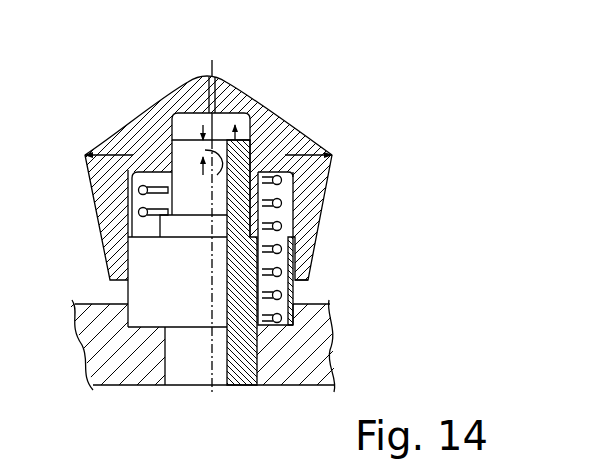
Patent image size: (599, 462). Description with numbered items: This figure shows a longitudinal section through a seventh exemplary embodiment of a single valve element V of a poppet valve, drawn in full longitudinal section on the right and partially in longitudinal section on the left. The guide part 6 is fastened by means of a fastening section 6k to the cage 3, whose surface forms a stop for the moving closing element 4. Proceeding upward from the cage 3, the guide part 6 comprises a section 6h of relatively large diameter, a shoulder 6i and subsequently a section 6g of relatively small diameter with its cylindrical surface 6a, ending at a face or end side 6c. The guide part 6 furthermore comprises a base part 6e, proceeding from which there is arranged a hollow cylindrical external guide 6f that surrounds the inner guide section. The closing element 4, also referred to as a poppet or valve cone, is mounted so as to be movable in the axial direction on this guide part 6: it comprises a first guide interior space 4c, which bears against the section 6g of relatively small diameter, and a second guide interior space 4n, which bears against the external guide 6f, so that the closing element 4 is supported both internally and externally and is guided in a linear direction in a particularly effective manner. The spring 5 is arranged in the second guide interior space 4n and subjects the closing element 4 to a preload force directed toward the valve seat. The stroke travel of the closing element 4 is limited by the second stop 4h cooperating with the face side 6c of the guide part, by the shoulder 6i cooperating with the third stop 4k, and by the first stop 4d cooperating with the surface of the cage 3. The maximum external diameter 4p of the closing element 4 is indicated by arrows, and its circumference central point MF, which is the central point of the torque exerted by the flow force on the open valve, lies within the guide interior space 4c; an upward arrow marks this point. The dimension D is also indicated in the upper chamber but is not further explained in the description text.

The cage 3 is at (298, 368).
The closing element 4 is at (200, 92).
The first guide interior space 4c is at (170, 113).
The first stop 4d is at (304, 284).
The second stop 4h is at (212, 62).
The third stop 4k is at (133, 155).
The second guide interior space 4n is at (288, 228).
The maximum external diameter 4p is at (88, 160).
The spring 5 is at (128, 213).
The guide part 6 is at (258, 152).
The cylindrical surface 6a is at (272, 145).
The face side 6c is at (222, 123).
The base part 6e is at (282, 305).
The external guide 6f is at (138, 286).
The section of relatively small diameter 6g is at (295, 150).
The section of relatively large diameter 6h is at (296, 305).
The shoulder 6i is at (268, 213).
The fastening section 6k is at (184, 368).
The distance D is at (172, 133).
The circumference central point MF is at (217, 175).
The valve element V is at (328, 63).